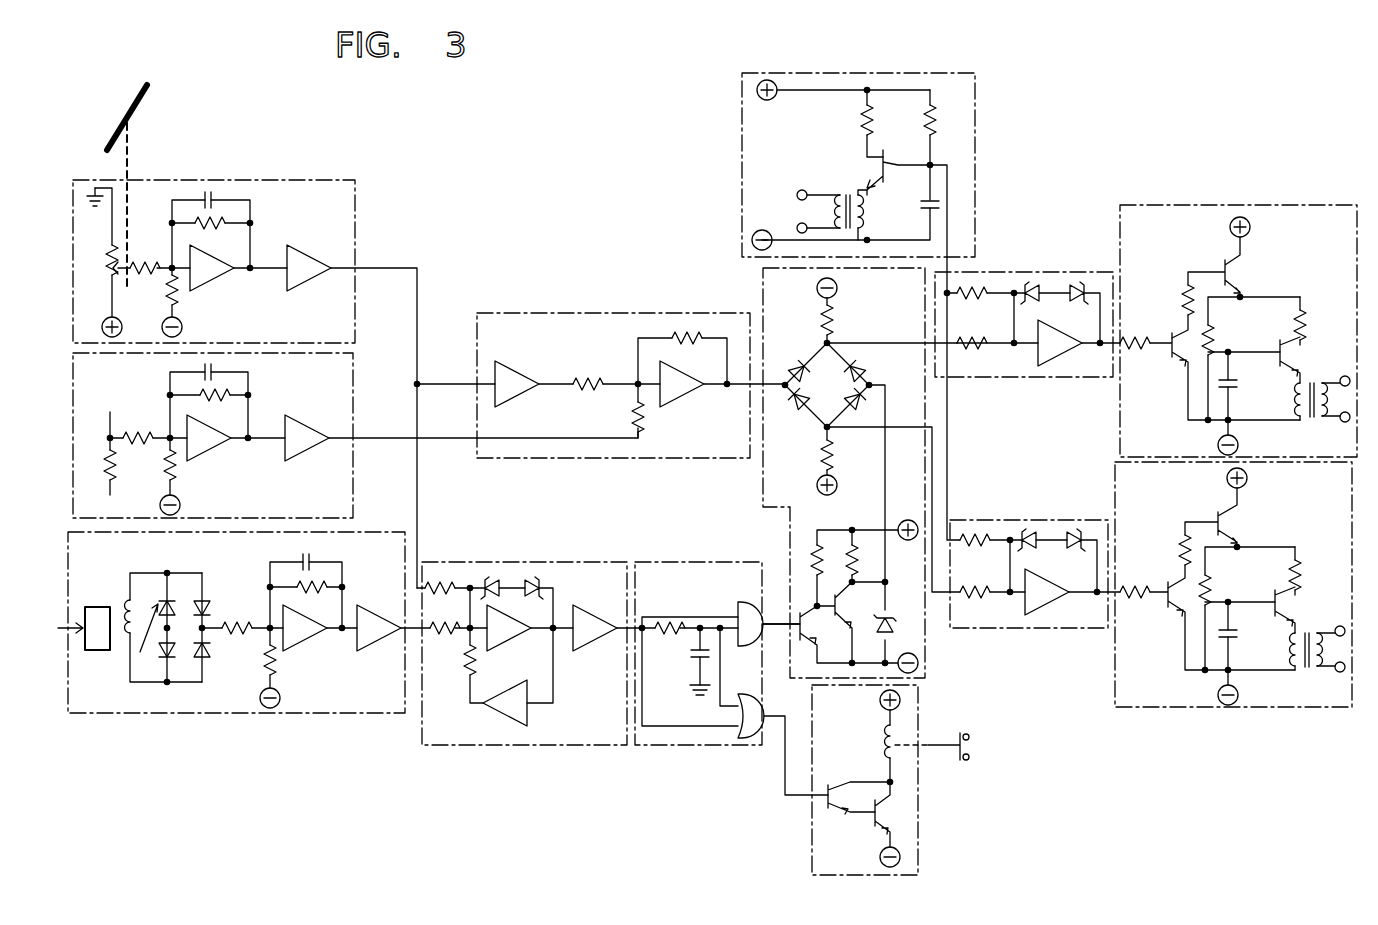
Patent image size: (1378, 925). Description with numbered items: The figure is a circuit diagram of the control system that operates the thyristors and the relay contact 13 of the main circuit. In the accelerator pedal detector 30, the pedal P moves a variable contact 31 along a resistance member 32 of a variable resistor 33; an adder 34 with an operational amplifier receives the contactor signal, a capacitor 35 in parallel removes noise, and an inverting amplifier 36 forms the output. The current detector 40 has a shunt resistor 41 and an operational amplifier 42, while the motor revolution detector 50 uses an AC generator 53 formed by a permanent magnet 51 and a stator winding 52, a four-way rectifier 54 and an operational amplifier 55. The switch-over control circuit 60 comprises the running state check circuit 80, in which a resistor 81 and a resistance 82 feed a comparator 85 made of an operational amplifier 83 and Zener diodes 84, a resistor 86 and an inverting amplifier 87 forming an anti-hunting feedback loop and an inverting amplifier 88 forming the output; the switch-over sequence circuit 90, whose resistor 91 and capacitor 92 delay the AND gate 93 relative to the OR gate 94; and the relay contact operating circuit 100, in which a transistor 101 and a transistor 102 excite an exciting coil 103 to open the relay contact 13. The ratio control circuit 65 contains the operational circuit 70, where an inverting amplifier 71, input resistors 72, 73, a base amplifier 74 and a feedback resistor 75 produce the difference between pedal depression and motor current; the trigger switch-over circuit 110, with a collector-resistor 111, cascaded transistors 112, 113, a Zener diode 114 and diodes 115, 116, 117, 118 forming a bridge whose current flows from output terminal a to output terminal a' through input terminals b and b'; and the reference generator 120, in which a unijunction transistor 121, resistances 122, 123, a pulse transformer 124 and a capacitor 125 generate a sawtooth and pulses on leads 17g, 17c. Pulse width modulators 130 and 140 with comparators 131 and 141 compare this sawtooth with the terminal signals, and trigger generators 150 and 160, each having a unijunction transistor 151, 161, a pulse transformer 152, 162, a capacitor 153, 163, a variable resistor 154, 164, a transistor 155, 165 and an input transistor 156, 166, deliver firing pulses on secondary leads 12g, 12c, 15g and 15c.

The pedal P is at (150, 108).
The accelerator pedal detector 30 is at (265, 180).
The variable contact 31 is at (143, 260).
The resistance member 32 is at (108, 262).
The variable resistor 33 is at (165, 290).
The adder 34 is at (240, 247).
The capacitor 35 is at (208, 195).
The inverting amplifier 36 is at (308, 262).
The current detector 40 is at (355, 405).
The shunt resistor 41 is at (115, 470).
The operational amplifier 42 is at (235, 415).
The motor revolution detector 50 is at (368, 532).
The permanent magnet 51 is at (97, 605).
The stator winding 52 is at (125, 645).
The AC generator 53 is at (57, 642).
The four-way rectifier 54 is at (185, 590).
The operational amplifier 55 is at (312, 645).
The switch-over control circuit 60 is at (508, 516).
The ratio control circuit 65 is at (1099, 158).
The operational circuit 70 is at (585, 313).
The inverting amplifier 71 is at (515, 370).
The input resistor 72 is at (602, 376).
The input resistor 73 is at (635, 416).
The base amplifier 74 is at (683, 396).
The feedback resistor 75 is at (697, 343).
The running state check circuit 80 is at (555, 562).
The resistor 81 is at (440, 580).
The resistance 82 is at (445, 640).
The operational amplifier 83 is at (510, 638).
The Zener diodes 84 is at (506, 616).
The comparator 85 is at (555, 600).
The resistor 86 is at (480, 660).
The inverting amplifier 87 is at (495, 712).
The inverting amplifier 88 is at (585, 648).
The switch-over sequence circuit 90 is at (685, 562).
The resistor 91 is at (668, 618).
The capacitor 92 is at (695, 660).
The AND gate 93 is at (750, 600).
The OR gate 94 is at (748, 694).
The relay contact operating circuit 100 is at (918, 795).
The transistor 101 is at (830, 785).
The transistor 102 is at (868, 818).
The exciting coil 103 is at (885, 745).
The relay contact 13 is at (962, 735).
The trigger switch-over circuit 110 is at (760, 512).
The collector-resistor 111 is at (817, 548).
The transistor 112 is at (810, 634).
The transistor 113 is at (830, 600).
The Zener diode 114 is at (890, 620).
The diode 115 is at (800, 355).
The diode 116 is at (800, 415).
The diode 117 is at (852, 408).
The diode 118 is at (857, 366).
The output terminal a is at (888, 508).
The output terminal a' is at (887, 312).
The input terminal b is at (875, 522).
The input terminal b' is at (774, 370).
The reference generator 120 is at (890, 73).
The unijunction transistor 121 is at (887, 160).
The resistance 122 is at (860, 118).
The resistance 123 is at (940, 125).
The pulse transformer 124 is at (862, 210).
The capacitor 125 is at (925, 203).
The output lead 17g is at (800, 192).
The output lead 17c is at (797, 226).
The pulse width modulator 130 is at (1035, 272).
The comparator 131 is at (1048, 335).
The pulse width modulator 140 is at (1008, 520).
The comparator 141 is at (1043, 585).
The trigger generator 150 is at (1238, 331).
The unijunction transistor 151 is at (1278, 348).
The pulse transformer 152 is at (1305, 390).
The capacitor 153 is at (1238, 385).
The variable resistor 154 is at (1195, 355).
The transistor 155 is at (1235, 268).
The input transistor 156 is at (1182, 310).
The secondary lead 12g is at (1345, 375).
The secondary lead 12c is at (1342, 422).
The trigger generator 160 is at (1233, 584).
The unijunction transistor 161 is at (1275, 598).
The pulse transformer 162 is at (1300, 640).
The capacitor 163 is at (1240, 637).
The variable resistor 164 is at (1190, 606).
The transistor 165 is at (1230, 518).
The input transistor 166 is at (1182, 560).
The secondary lead 15g is at (1340, 625).
The secondary lead 15c is at (1338, 672).